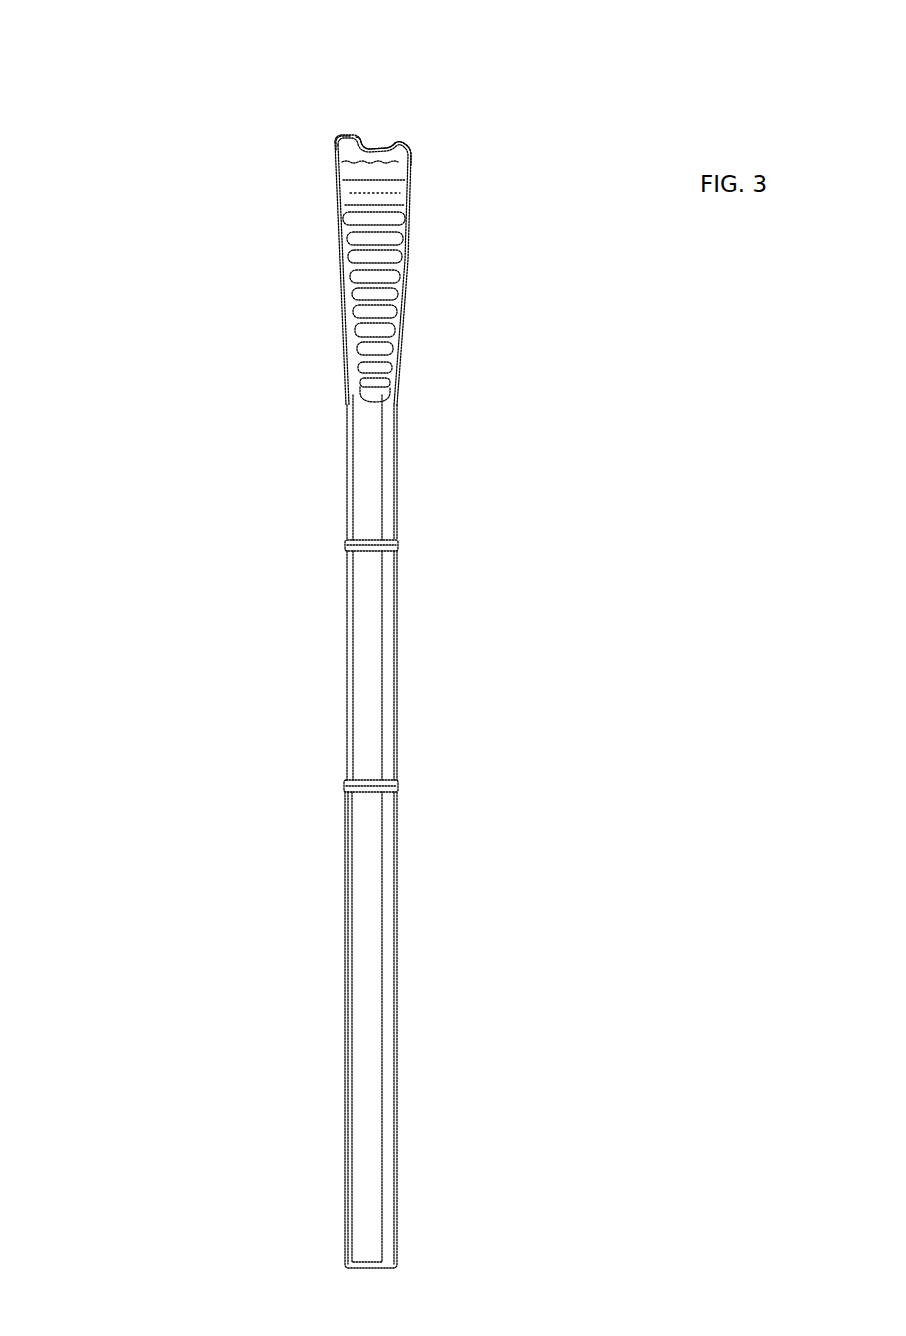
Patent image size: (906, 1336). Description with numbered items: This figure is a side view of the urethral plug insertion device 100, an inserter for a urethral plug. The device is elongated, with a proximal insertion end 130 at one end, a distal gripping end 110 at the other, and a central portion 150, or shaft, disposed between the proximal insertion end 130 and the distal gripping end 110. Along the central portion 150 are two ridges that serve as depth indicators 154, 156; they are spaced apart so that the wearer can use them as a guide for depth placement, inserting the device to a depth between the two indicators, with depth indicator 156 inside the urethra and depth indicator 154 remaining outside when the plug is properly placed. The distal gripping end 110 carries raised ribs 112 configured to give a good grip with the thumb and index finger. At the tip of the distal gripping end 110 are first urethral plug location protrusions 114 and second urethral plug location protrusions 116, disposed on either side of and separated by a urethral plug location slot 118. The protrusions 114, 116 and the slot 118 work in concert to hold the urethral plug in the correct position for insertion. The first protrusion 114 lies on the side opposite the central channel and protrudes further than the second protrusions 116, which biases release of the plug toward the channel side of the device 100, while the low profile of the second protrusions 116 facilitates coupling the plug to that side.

The urethral plug insertion device 100 is at (517, 533).
The distal gripping end 110 is at (358, 337).
The raised ribs 112 is at (408, 210).
The first urethral plug location protrusion 114 is at (343, 138).
The second urethral plug location protrusion 116 is at (397, 143).
The urethral plug location slot 118 is at (368, 132).
The proximal insertion end 130 is at (368, 1114).
The central portion 150 is at (375, 687).
The depth indicator 154 is at (357, 550).
The depth indicator 156 is at (362, 773).